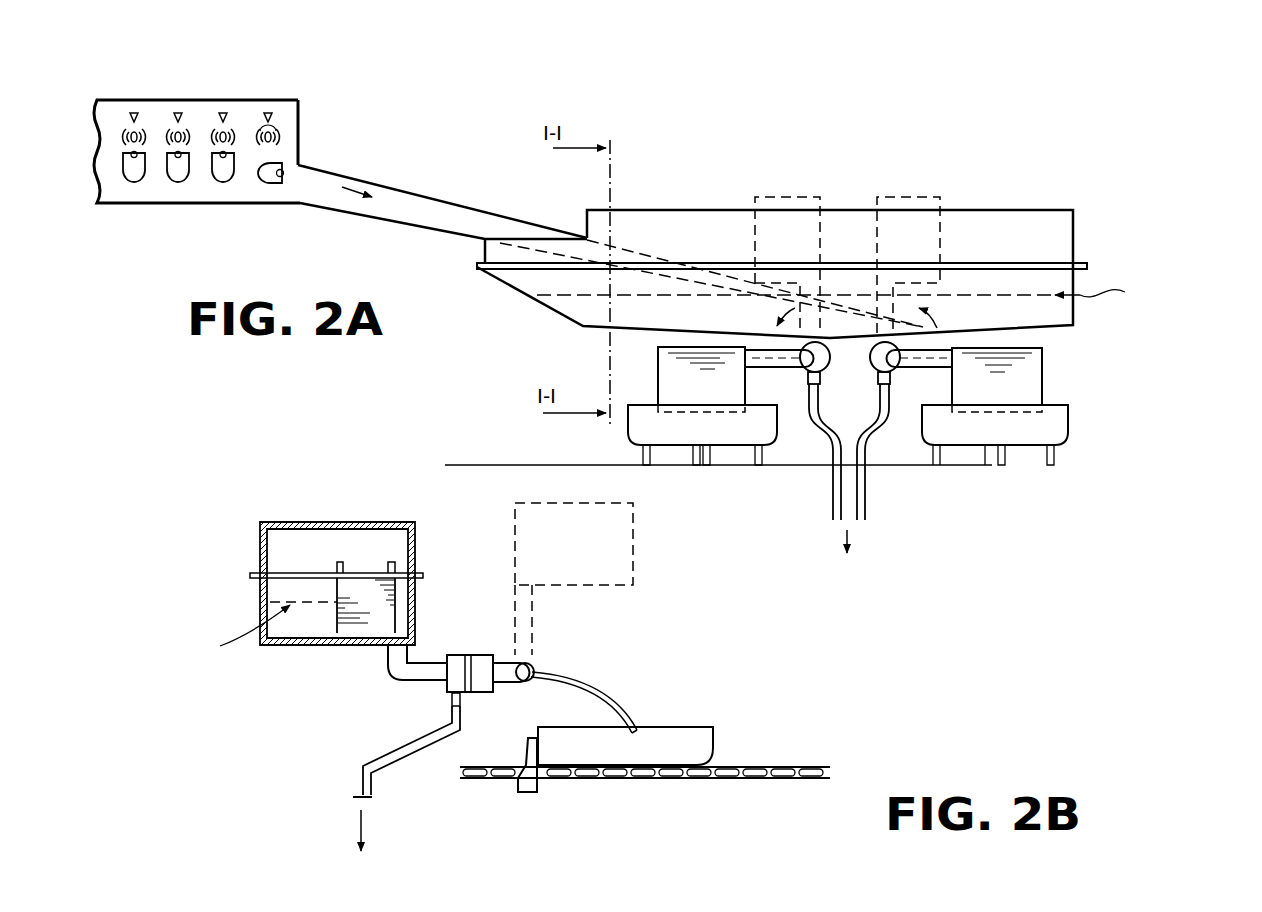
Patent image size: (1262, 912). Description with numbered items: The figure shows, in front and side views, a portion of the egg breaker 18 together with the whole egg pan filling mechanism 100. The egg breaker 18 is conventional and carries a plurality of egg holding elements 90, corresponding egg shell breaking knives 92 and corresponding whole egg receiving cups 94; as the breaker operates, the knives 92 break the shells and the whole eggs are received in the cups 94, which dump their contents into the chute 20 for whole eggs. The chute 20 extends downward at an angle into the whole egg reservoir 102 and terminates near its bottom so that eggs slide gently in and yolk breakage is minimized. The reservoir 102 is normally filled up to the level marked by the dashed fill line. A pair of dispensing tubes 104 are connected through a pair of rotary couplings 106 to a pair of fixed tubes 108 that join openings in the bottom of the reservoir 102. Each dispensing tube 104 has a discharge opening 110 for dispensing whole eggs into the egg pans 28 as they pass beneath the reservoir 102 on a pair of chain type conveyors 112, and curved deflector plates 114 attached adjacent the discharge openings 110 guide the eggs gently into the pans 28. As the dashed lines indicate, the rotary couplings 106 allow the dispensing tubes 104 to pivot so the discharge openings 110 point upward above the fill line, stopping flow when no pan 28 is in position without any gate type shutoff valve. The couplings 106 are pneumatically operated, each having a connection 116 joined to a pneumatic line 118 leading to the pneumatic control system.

In FIG. 2A, the egg breaker 18 is at (153, 188).
In FIG. 2A, the chute 20 is at (410, 203).
In FIG. 2B, the chute 20 is at (363, 620).
In FIG. 2A, the egg pan 28 is at (762, 427).
In FIG. 2B, the egg pan 28 is at (700, 743).
In FIG. 2A, the egg holding element 90 is at (282, 133).
In FIG. 2A, the egg shell breaking knife 92 is at (268, 120).
In FIG. 2A, the whole egg receiving cup 94 is at (261, 185).
In FIG. 2A, the whole egg pan filling mechanism 100 is at (1057, 146).
In FIG. 2B, the whole egg pan filling mechanism 100 is at (343, 501).
In FIG. 2A, the whole egg reservoir 102 is at (1055, 245).
In FIG. 2B, the whole egg reservoir 102 is at (385, 533).
In FIG. 2A, the dispensing tube 104 is at (773, 359).
In FIG. 2A, the rotary coupling 106 is at (872, 364).
In FIG. 2B, the rotary coupling 106 is at (463, 651).
In FIG. 2B, the fixed tube 108 is at (384, 690).
In FIG. 2A, the discharge opening 110 is at (736, 365).
In FIG. 2B, the discharge opening 110 is at (531, 665).
In FIG. 2A, the chain type conveyor 112 is at (718, 476).
In FIG. 2B, the chain type conveyor 112 is at (612, 779).
In FIG. 2A, the curved deflector plate 114 is at (660, 376).
In FIG. 2B, the curved deflector plate 114 is at (605, 696).
In FIG. 2A, the connection 116 is at (878, 388).
In FIG. 2B, the connection 116 is at (448, 704).
In FIG. 2A, the pneumatic line 118 is at (862, 492).
In FIG. 2B, the pneumatic line 118 is at (427, 748).